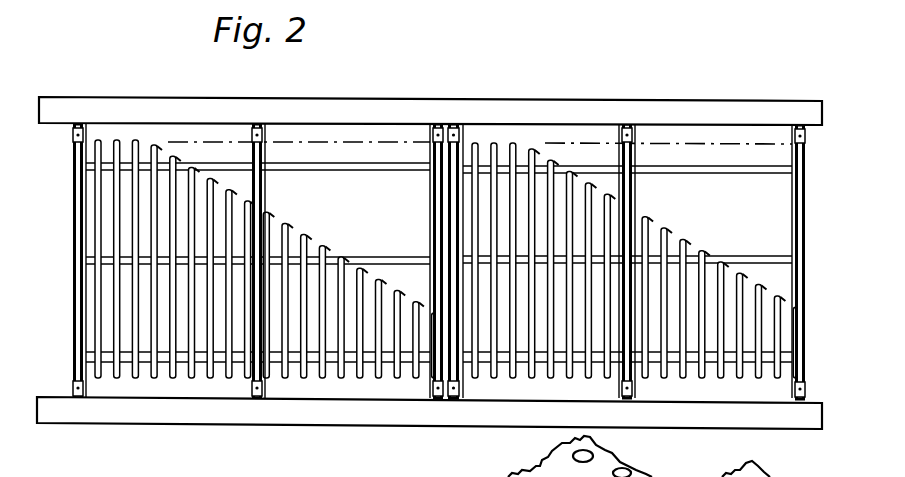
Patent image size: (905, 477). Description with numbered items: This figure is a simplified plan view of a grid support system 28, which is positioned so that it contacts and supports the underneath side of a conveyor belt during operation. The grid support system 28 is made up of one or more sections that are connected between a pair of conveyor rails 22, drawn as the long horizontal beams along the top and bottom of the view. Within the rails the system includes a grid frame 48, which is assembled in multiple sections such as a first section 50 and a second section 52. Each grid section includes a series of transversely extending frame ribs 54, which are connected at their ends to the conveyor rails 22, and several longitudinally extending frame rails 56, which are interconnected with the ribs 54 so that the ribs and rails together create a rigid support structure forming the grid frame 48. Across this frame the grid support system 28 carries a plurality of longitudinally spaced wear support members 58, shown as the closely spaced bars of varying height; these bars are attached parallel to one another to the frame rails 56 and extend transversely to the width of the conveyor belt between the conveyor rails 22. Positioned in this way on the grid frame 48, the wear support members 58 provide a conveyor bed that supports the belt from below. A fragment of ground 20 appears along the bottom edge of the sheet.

The ground surface 20 is at (668, 456).
The conveyor rails 22 is at (776, 104).
The first grid support system 28 is at (718, 158).
The grid frame 48 is at (812, 172).
The first section 50 is at (804, 201).
The second section 52 is at (72, 190).
The frame ribs 54 is at (620, 157).
The frame rails 56 is at (309, 171).
The wear support members 58 is at (311, 239).